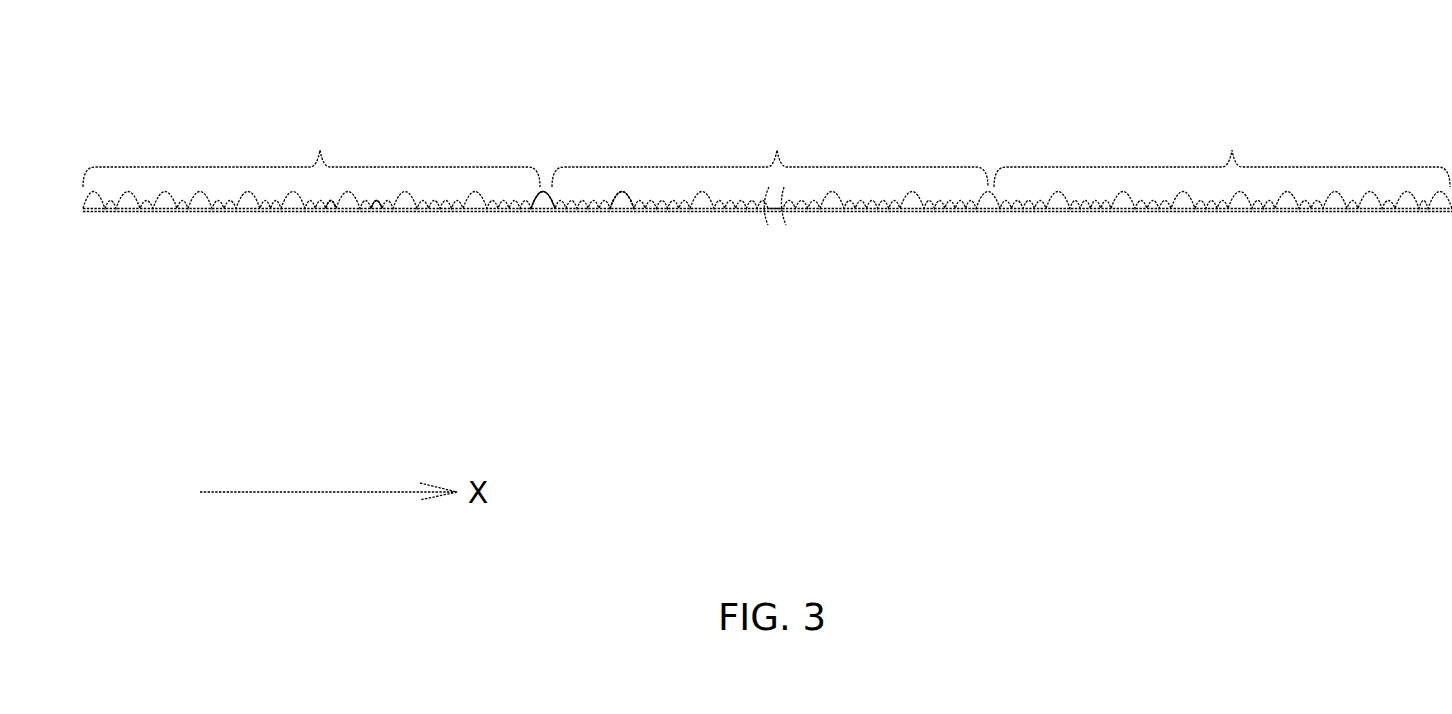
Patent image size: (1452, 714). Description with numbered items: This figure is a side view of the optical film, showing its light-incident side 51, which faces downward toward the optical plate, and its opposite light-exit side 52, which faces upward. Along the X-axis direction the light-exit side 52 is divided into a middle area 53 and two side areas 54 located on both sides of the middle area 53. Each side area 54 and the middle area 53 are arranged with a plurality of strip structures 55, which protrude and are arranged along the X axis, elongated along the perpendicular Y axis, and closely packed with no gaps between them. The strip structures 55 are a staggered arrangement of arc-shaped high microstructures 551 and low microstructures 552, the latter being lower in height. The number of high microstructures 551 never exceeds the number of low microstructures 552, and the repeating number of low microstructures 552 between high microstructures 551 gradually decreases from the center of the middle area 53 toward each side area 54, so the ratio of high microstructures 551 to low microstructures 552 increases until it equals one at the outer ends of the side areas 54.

The light-incident side 51 is at (992, 243).
The light-exit side 52 is at (989, 140).
The middle area 53 is at (770, 148).
The side area 54 is at (766, 150).
The strip structures 55 is at (378, 209).
The high microstructures 551 is at (533, 279).
The low microstructures 552 is at (302, 282).